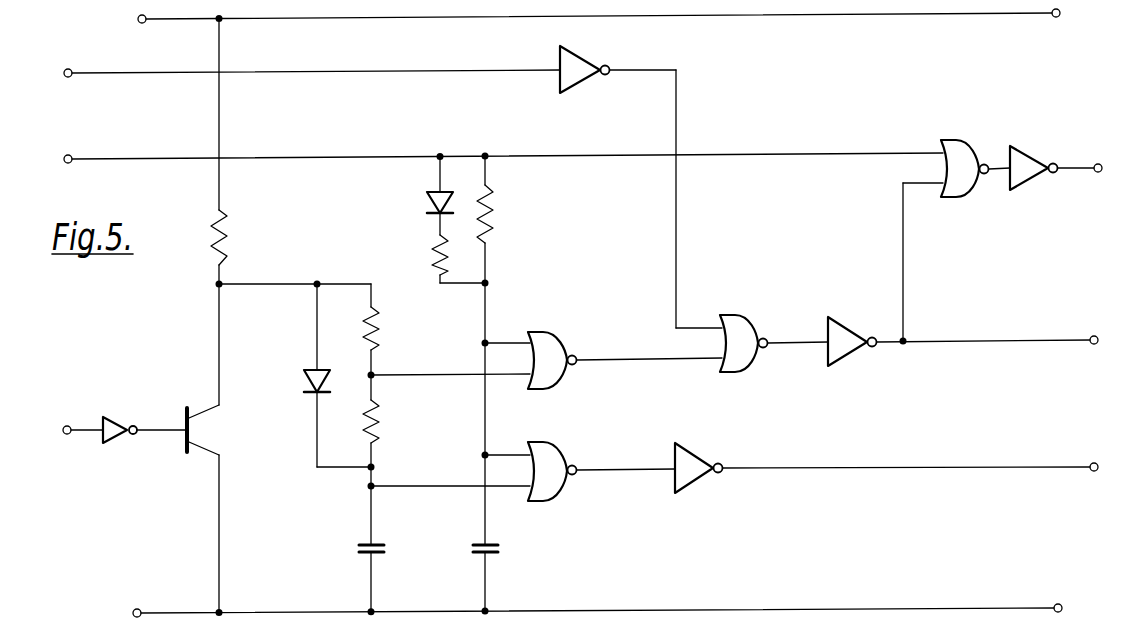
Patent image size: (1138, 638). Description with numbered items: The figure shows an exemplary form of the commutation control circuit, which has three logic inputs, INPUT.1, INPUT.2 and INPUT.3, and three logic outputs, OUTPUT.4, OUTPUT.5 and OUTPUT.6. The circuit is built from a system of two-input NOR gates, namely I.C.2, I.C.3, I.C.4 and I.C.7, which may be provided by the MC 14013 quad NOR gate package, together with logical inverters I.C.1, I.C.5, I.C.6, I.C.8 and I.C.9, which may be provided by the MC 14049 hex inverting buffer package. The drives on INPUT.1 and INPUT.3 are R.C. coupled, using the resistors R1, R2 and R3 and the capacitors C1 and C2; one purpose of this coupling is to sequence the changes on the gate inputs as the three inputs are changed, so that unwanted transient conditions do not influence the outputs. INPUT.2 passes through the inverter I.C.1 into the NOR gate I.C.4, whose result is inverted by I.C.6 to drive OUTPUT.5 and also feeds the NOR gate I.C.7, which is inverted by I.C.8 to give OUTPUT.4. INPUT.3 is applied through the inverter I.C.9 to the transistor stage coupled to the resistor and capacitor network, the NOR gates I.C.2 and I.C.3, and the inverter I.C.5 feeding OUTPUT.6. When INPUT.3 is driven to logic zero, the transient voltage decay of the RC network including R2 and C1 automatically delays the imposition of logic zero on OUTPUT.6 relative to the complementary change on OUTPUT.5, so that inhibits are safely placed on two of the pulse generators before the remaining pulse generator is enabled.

The resistor R1 is at (235, 237).
The resistor R2 is at (387, 330).
The resistor R3 is at (392, 421).
The capacitor C1 is at (388, 550).
The capacitor C2 is at (504, 550).
The logical inverter I.C.1 is at (641, 186).
The NOR gate I.C.2 is at (603, 349).
The NOR gate I.C.3 is at (580, 466).
The NOR gate I.C.4 is at (766, 329).
The logical inverter I.C.5 is at (874, 465).
The logical inverter I.C.6 is at (952, 326).
The NOR gate I.C.7 is at (970, 176).
The logical inverter I.C.8 is at (1044, 182).
The logical inverter I.C.9 is at (145, 442).
The logic input INPUT.1 is at (503, 147).
The logic input INPUT.2 is at (312, 61).
The logic input INPUT.3 is at (100, 413).
The logic output OUTPUT.4 is at (1086, 155).
The logic output OUTPUT.5 is at (1088, 329).
The logic output OUTPUT.6 is at (1081, 455).